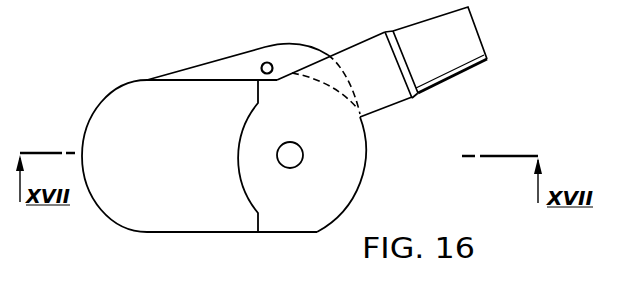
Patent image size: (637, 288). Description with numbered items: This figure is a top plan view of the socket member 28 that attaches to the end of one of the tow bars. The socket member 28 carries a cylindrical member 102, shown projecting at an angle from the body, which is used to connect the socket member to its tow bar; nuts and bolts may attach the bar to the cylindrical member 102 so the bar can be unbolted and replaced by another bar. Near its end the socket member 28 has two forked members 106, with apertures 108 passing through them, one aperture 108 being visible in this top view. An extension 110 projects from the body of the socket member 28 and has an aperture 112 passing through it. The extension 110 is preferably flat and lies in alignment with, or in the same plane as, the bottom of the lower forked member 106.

The socket member 28 is at (115, 206).
The cylindrical member 102 is at (467, 40).
The forked members 106 is at (320, 234).
The apertures 108 is at (285, 151).
The extension 110 is at (211, 68).
The aperture 112 is at (271, 63).